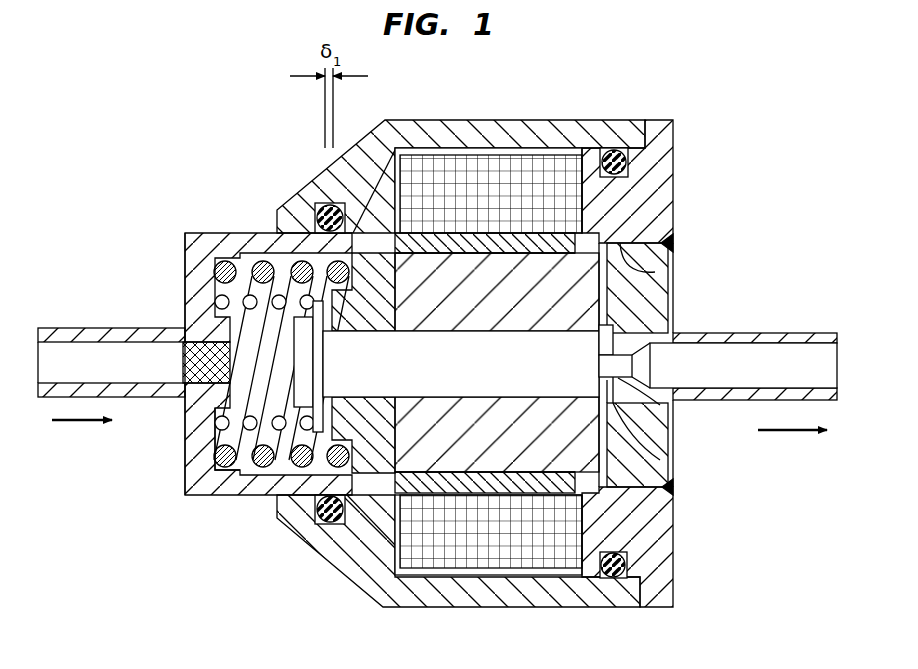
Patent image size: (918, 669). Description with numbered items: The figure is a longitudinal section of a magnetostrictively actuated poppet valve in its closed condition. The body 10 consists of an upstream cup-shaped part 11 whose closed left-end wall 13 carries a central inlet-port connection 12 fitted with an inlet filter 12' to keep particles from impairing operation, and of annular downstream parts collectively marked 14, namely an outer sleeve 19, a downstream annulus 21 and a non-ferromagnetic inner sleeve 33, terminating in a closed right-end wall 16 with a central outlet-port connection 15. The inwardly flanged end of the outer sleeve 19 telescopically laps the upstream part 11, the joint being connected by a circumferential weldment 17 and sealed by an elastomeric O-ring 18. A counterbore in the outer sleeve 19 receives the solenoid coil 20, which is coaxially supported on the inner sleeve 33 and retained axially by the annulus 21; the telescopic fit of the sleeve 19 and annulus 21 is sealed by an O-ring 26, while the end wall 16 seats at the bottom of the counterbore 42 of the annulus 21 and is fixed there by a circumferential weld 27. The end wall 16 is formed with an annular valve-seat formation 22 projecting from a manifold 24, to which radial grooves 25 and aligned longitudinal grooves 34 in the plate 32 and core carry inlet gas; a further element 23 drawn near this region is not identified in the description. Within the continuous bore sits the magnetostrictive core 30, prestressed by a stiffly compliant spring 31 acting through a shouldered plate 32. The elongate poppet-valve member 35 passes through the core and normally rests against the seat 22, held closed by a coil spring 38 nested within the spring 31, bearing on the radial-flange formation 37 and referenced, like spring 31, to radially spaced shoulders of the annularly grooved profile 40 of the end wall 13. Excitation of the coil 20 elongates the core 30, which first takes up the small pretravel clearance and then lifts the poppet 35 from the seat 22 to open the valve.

The body 10 is at (268, 523).
The upstream cup-shaped part 11 is at (243, 230).
The inlet-port connection 12 is at (111, 345).
The inlet filter 12' is at (182, 332).
The closed left-end wall 13 is at (195, 440).
The annular downstream parts 14 is at (513, 118).
The outlet-port connection 15 is at (775, 333).
The right-end wall 16 is at (657, 300).
The circumferential weldment 17 is at (268, 232).
The elastomeric O-ring 18 is at (330, 523).
The outer sleeve 19 is at (445, 120).
The solenoid coil 20 is at (442, 555).
The downstream annulus 21 is at (673, 170).
The valve-seat formation 22 is at (605, 343).
The pressure disc 23 is at (657, 402).
The manifold 24 is at (617, 330).
The radial grooves 25 is at (592, 460).
The elastomeric O-ring 26 is at (618, 160).
The circumferential weld 27 is at (675, 243).
The magnetostrictive core 30 is at (492, 302).
The prestressing spring 31 is at (218, 268).
The shouldered plate 32 is at (385, 452).
The inner sleeve 33 is at (556, 245).
The longitudinal grooves 34 is at (513, 470).
The poppet-valve member 35 is at (442, 372).
The radial-flange formation 37 is at (303, 381).
The coil spring 38 is at (232, 490).
The annularly grooved profile 40 is at (215, 470).
The counterbore 42 is at (655, 272).